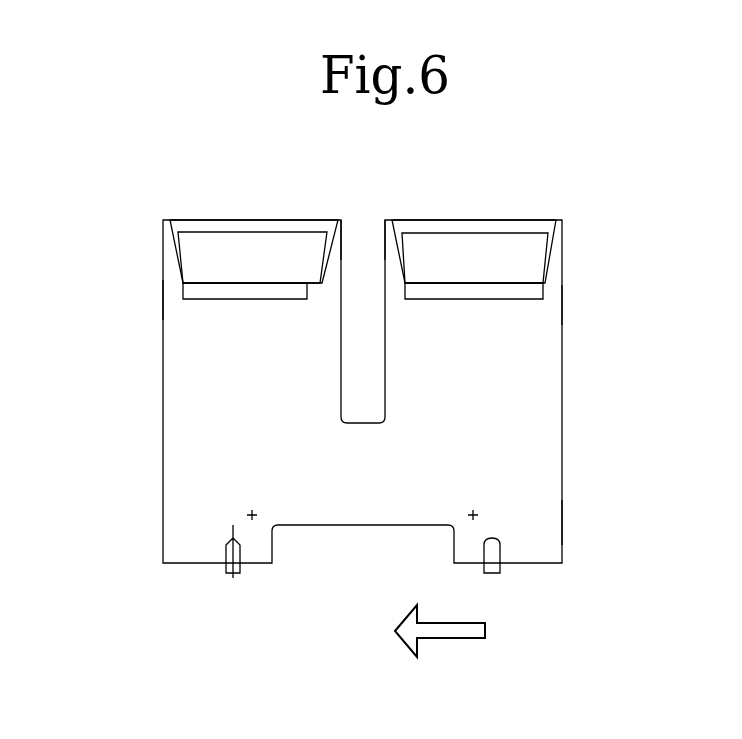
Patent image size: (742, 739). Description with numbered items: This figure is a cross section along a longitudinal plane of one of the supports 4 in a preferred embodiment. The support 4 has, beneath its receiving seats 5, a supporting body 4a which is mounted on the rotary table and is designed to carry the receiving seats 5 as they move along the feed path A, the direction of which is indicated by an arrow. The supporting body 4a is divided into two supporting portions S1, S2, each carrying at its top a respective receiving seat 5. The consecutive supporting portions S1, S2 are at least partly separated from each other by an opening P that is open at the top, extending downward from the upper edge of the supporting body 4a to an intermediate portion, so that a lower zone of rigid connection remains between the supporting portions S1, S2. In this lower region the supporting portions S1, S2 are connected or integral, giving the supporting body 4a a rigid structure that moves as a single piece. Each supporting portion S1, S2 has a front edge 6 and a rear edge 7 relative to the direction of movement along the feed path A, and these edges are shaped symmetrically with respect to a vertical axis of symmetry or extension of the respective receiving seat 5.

The support 4 is at (603, 402).
The supporting body 4a is at (563, 521).
The receiving seat 5 is at (244, 219).
The front edge 6 is at (163, 299).
The rear edge 7 is at (350, 226).
The supporting portion S1 is at (188, 415).
The supporting portion S2 is at (532, 448).
The opening P is at (362, 370).
The feed path A is at (450, 640).